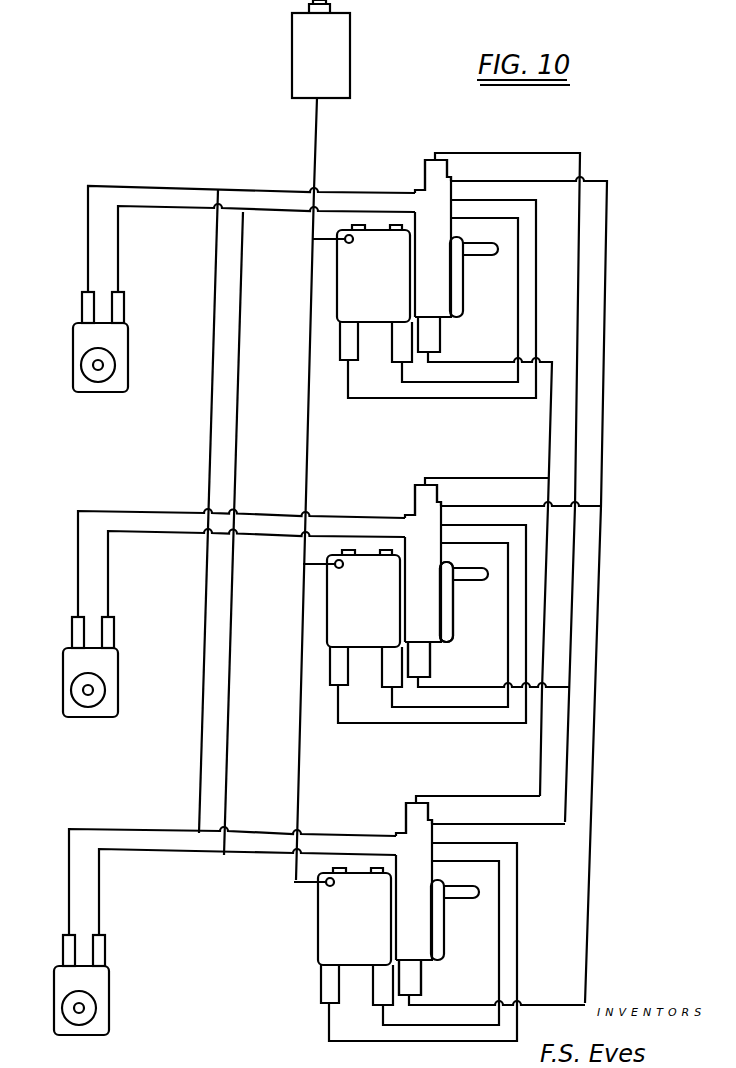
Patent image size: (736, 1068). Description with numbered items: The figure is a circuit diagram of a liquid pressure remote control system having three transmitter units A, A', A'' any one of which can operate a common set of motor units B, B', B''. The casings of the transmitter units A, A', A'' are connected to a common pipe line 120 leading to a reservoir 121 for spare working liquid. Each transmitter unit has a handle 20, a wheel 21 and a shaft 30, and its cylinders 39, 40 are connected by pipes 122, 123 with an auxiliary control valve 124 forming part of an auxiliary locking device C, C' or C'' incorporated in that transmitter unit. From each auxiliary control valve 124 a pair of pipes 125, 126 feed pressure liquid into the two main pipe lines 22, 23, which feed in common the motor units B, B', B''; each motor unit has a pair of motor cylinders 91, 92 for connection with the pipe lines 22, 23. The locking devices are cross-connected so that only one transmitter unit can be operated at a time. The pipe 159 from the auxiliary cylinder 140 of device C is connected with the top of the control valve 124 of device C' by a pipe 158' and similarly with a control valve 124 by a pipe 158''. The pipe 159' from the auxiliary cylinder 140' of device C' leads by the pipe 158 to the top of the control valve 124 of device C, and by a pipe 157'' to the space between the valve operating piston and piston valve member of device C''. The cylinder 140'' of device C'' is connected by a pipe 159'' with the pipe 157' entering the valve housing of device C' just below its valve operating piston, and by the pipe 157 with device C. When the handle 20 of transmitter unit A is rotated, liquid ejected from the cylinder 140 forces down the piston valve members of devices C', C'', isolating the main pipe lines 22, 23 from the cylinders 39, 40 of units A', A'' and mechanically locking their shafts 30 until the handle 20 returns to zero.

The transmitter unit A is at (361, 273).
The transmitter unit A' is at (351, 598).
The transmitter unit A'' is at (342, 916).
The motor unit B is at (88, 357).
The motor unit B' is at (78, 682).
The motor unit B'' is at (69, 1000).
The auxiliary locking device C is at (433, 238).
The auxiliary locking device C' is at (423, 563).
The auxiliary locking device C'' is at (414, 881).
The reservoir 121 is at (347, 60).
The common pipe line 120 is at (310, 440).
The pipe 125 is at (368, 190).
The pipe 126 is at (328, 208).
The auxiliary control valve 124 is at (428, 174).
The pipe 158 is at (507, 471).
The pipe 157 is at (529, 582).
The pipe 158' is at (487, 466).
The pipe 157' is at (521, 493).
The pipe 158'' is at (478, 783).
The pipe 157'' is at (498, 810).
The handle 20 is at (477, 248).
The shaft 30 is at (452, 279).
The wheel 21 is at (454, 626).
The auxiliary cylinder 140 is at (452, 648).
The auxiliary cylinder 140' is at (452, 656).
The auxiliary cylinder 140'' is at (445, 977).
The pipe 159 is at (490, 565).
The pipe 159' is at (493, 674).
The pipe 159'' is at (497, 1016).
The cylinder 40 is at (401, 340).
The cylinder 39 is at (350, 356).
The pipe 123 is at (462, 382).
The pipe 122 is at (455, 399).
The main pipe line 22 is at (213, 398).
The main pipe line 23 is at (243, 400).
The motor cylinder 91 is at (82, 306).
The motor cylinder 92 is at (124, 306).